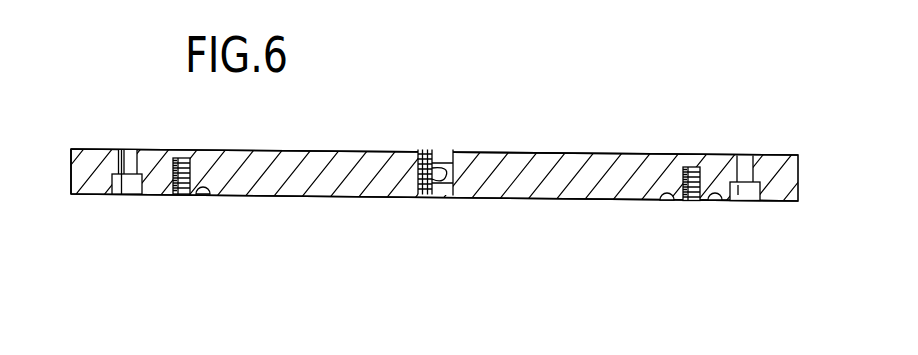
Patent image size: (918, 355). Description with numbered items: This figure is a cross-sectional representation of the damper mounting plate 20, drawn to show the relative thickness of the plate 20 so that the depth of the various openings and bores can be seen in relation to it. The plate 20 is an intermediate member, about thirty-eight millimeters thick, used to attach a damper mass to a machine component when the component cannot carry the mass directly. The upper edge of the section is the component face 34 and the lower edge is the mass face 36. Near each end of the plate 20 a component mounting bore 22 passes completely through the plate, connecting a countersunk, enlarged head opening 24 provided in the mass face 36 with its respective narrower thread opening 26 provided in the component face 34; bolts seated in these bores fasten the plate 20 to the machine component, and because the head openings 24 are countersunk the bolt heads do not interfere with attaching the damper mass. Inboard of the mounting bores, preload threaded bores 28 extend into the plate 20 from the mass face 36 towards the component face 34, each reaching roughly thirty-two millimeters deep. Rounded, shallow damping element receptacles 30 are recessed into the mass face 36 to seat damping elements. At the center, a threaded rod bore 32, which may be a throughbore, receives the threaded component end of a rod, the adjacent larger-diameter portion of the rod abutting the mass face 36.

The damper mounting plate 20 is at (500, 148).
The component mounting bore 22 is at (131, 195).
The head opening 24 is at (100, 195).
The thread opening 26 is at (128, 157).
The preload threaded bore 28 is at (183, 158).
The damping element receptacle 30 is at (204, 197).
The threaded rod bore 32 is at (443, 197).
The component face 34 is at (316, 150).
The mass face 36 is at (307, 196).